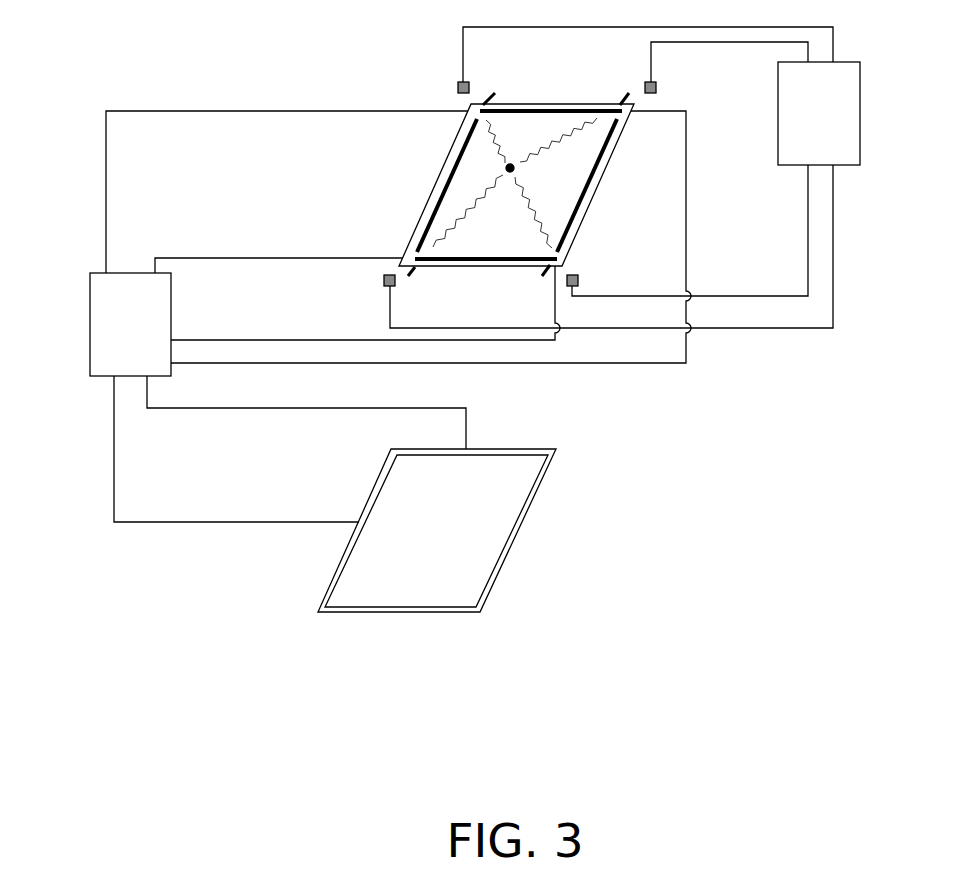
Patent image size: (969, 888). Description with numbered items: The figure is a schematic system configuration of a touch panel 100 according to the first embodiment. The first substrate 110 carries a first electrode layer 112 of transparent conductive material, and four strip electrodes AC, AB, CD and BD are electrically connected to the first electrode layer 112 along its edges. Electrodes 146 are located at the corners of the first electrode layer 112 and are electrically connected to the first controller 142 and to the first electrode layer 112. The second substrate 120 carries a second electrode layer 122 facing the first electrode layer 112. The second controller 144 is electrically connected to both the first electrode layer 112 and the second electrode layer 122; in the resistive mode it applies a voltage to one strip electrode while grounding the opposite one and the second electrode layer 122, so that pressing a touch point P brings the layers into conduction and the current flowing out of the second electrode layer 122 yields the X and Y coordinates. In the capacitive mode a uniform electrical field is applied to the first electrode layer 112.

The touch panel 100 is at (475, 319).
The first substrate 110 is at (522, 187).
The first electrode layer 112 is at (557, 168).
The second substrate 120 is at (444, 530).
The second electrode layer 122 is at (490, 526).
The first controller 142 is at (853, 98).
The second controller 144 is at (103, 307).
The electrodes 146 is at (457, 87).